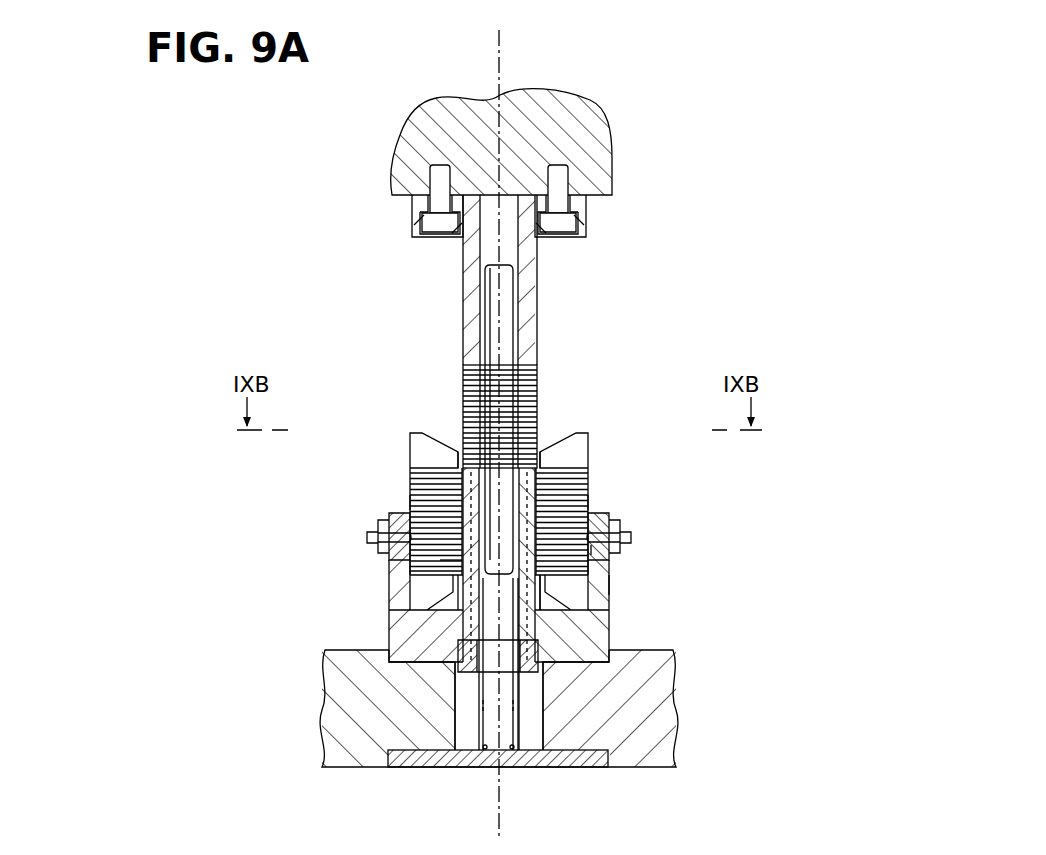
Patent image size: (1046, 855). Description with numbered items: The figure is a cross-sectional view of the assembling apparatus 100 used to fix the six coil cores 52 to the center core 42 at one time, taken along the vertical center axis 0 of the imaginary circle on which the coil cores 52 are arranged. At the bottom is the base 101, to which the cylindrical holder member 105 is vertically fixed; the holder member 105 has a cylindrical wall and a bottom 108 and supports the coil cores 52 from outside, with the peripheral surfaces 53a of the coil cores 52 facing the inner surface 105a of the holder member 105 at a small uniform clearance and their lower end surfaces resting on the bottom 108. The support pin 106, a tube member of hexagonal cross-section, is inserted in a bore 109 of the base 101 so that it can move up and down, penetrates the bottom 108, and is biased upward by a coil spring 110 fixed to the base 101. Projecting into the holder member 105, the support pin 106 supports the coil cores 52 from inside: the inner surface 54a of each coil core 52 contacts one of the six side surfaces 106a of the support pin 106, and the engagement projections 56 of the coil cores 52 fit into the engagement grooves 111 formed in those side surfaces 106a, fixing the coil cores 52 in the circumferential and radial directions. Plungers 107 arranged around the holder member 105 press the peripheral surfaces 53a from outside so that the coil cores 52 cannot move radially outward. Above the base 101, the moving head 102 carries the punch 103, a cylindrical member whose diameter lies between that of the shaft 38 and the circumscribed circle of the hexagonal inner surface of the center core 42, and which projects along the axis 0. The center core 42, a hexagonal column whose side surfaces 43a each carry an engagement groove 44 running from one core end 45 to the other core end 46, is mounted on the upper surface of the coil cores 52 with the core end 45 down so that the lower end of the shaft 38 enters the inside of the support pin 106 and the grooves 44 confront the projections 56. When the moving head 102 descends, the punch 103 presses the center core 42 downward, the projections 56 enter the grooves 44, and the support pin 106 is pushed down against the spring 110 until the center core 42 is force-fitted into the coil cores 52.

The axis 0 is at (505, 804).
The assembling apparatus 100 is at (622, 99).
The base 101 is at (338, 700).
The moving head 102 is at (415, 150).
The punch 103 is at (468, 292).
The shaft 38 is at (513, 320).
The center core 42 is at (507, 391).
The engagement groove 44 is at (465, 397).
The core end 46 is at (492, 372).
The side surface 43a is at (462, 430).
The coil core 52 is at (409, 453).
The core end 45 is at (430, 480).
The peripheral surface 53a is at (592, 488).
The side surface 106a is at (412, 500).
The bore of block 105a is at (600, 502).
The plunger 107 is at (372, 536).
The engagement groove 111 is at (600, 548).
The inner surface 54a is at (443, 562).
The holder member 105 is at (603, 585).
The engagement projection 56 is at (540, 596).
The bottom 108 is at (440, 630).
The support pin 106 is at (603, 628).
The bore 109 is at (530, 698).
The coil spring 110 is at (488, 745).